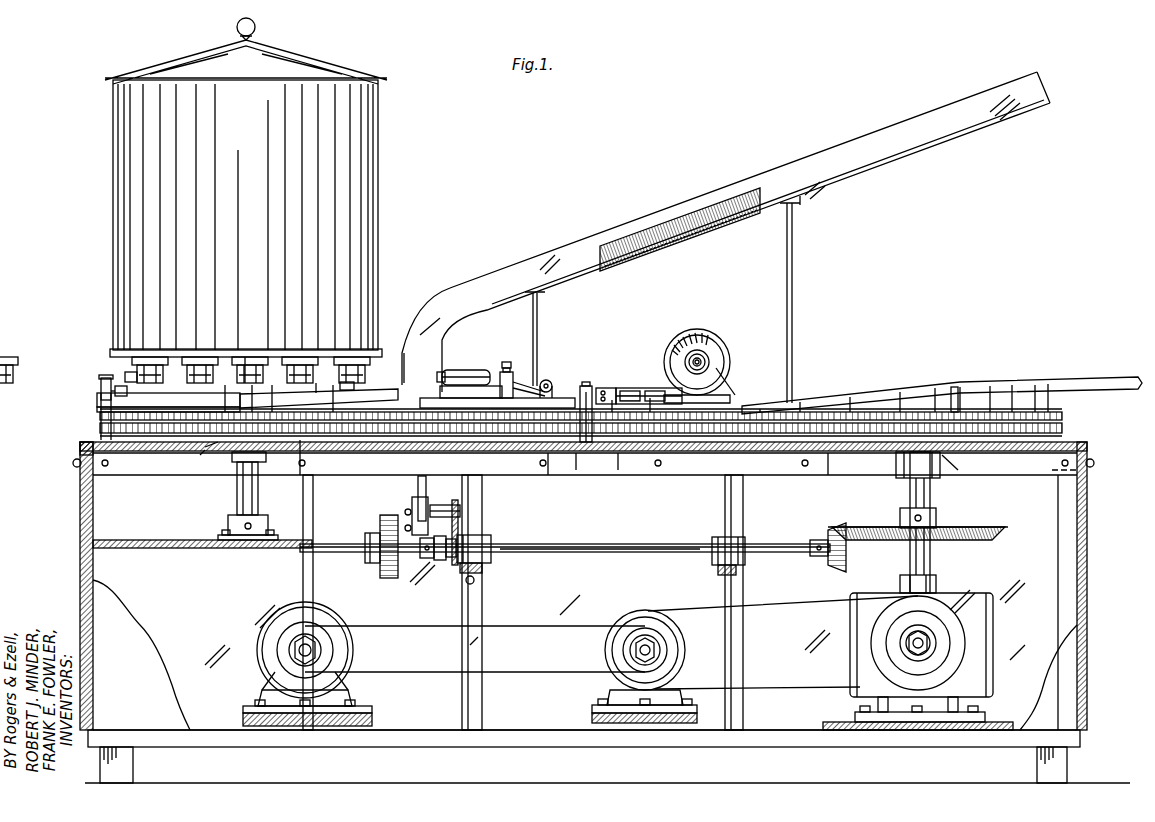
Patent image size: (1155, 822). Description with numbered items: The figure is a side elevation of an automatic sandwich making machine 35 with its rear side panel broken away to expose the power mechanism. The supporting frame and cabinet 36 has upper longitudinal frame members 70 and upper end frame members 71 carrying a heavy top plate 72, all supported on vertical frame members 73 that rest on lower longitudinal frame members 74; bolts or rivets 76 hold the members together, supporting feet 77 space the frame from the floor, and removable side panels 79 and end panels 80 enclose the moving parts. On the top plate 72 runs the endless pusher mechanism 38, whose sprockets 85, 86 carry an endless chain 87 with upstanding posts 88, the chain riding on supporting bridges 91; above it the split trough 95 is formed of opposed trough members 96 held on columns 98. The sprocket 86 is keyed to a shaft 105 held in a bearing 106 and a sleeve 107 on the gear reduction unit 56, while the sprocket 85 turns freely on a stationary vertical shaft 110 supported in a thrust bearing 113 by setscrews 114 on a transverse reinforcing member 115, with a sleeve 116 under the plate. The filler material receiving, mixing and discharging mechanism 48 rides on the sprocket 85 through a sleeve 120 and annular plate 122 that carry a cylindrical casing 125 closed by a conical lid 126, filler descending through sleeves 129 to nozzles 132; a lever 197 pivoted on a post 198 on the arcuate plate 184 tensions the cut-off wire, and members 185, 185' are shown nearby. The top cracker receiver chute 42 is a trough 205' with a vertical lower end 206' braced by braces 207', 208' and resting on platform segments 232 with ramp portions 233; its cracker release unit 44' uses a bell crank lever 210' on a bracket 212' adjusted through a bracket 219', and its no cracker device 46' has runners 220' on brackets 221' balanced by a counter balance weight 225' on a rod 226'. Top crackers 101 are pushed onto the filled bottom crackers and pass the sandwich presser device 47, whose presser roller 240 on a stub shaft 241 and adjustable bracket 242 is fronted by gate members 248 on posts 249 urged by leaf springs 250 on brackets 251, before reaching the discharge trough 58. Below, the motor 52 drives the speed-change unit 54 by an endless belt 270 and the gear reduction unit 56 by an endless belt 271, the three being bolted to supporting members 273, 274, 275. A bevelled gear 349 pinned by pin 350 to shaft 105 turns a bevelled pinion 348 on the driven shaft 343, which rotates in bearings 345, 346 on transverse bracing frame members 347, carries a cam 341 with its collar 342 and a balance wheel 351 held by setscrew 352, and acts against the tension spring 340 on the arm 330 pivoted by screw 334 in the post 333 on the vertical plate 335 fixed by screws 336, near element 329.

The sandwich making machine 35 is at (1004, 243).
The supporting frame and cabinet 36 is at (1093, 728).
The endless pusher mechanism 38 is at (1079, 432).
The top cracker receiver chute 42 is at (558, 242).
The cracker release unit 44' is at (480, 343).
The no cracker device 46' is at (567, 365).
The sandwich presser device 47 is at (731, 328).
The filler material receiving, mixing and discharging mechanism 48 is at (92, 345).
The motor 52 is at (335, 624).
The speed-change unit 54 is at (627, 630).
The gear reduction unit 56 is at (975, 606).
The discharge trough 58 is at (1002, 381).
The upper longitudinal frame members 70 is at (571, 495).
The upper end frame members 71 is at (82, 446).
The top plate 72 is at (1082, 444).
The vertical frame members 73 is at (1067, 585).
The lower longitudinal frame members 74 is at (412, 735).
The bolts or rivets 76 is at (1094, 463).
The supporting feet 77 is at (125, 769).
The side panels 79 is at (135, 658).
The end panels 80 is at (1090, 512).
The sprocket 85 is at (190, 460).
The sprocket 86 is at (950, 456).
The endless chain 87 is at (952, 400).
The posts 88 is at (160, 447).
The supporting bridges 91 is at (548, 472).
The split trough 95 is at (316, 383).
The trough members 96 is at (303, 490).
The columns 98 is at (1040, 414).
The top cracker 101 is at (706, 202).
The shaft 105 is at (932, 496).
The bearing 106 is at (898, 474).
The sleeve 107 is at (905, 583).
The stationary vertical shaft 110 is at (237, 492).
The thrust bearing 113 is at (230, 525).
The setscrews 114 is at (246, 532).
The transverse reinforcing member 115 is at (187, 549).
The sleeve 116 is at (236, 459).
The sleeve 120 is at (262, 354).
The plate 122 is at (138, 350).
The cylindrical casing 125 is at (345, 172).
The conical lid 126 is at (198, 53).
The sleeves 129 is at (240, 352).
The nozzle 132 is at (135, 376).
The arcuate plate 184 is at (97, 400).
The plate 185 is at (142, 401).
The plate 185' is at (185, 454).
The lever 197 is at (100, 392).
The post 198 is at (100, 379).
The trough 205' is at (726, 232).
The lower end 206' is at (398, 321).
The brace 207' is at (817, 299).
The brace 208' is at (563, 339).
The bell crank lever 210' is at (483, 359).
The bracket 212' is at (483, 427).
The bracket 219' is at (590, 347).
The runners 220' is at (597, 403).
The bracket 221' is at (576, 373).
The counter balance weight 225' is at (443, 334).
The rod 226' is at (541, 366).
The platform segments 232 is at (400, 394).
The ramp portions 233 is at (445, 440).
The presser roller 240 is at (702, 334).
The stub shaft 241 is at (712, 362).
The adjustable bracket 242 is at (728, 386).
The gate members 248 is at (640, 388).
The posts 249 is at (576, 458).
The leaf springs 250 is at (608, 388).
The brackets 251 is at (619, 470).
The endless belt 270 is at (534, 628).
The endless belt 271 is at (792, 628).
The supporting member 273 is at (292, 727).
The supporting member 274 is at (629, 727).
The supporting member 275 is at (840, 730).
The rod 329 is at (418, 480).
The arm 330 is at (412, 501).
The post 333 is at (458, 506).
The screw 334 is at (405, 512).
The vertical plate 335 is at (492, 523).
The screws 336 is at (471, 584).
The tension spring 340 is at (404, 528).
The cam 341 is at (441, 562).
The collar 342 is at (425, 560).
The driven shaft 343 is at (606, 544).
The bearing 345 is at (500, 545).
The bearing 346 is at (716, 535).
The transverse bracing frame members 347 is at (484, 573).
The bevelled pinion 348 is at (812, 557).
The bevelled gear 349 is at (965, 540).
The pin 350 is at (937, 518).
The balance wheel 351 is at (382, 574).
The setscrew 352 is at (368, 551).